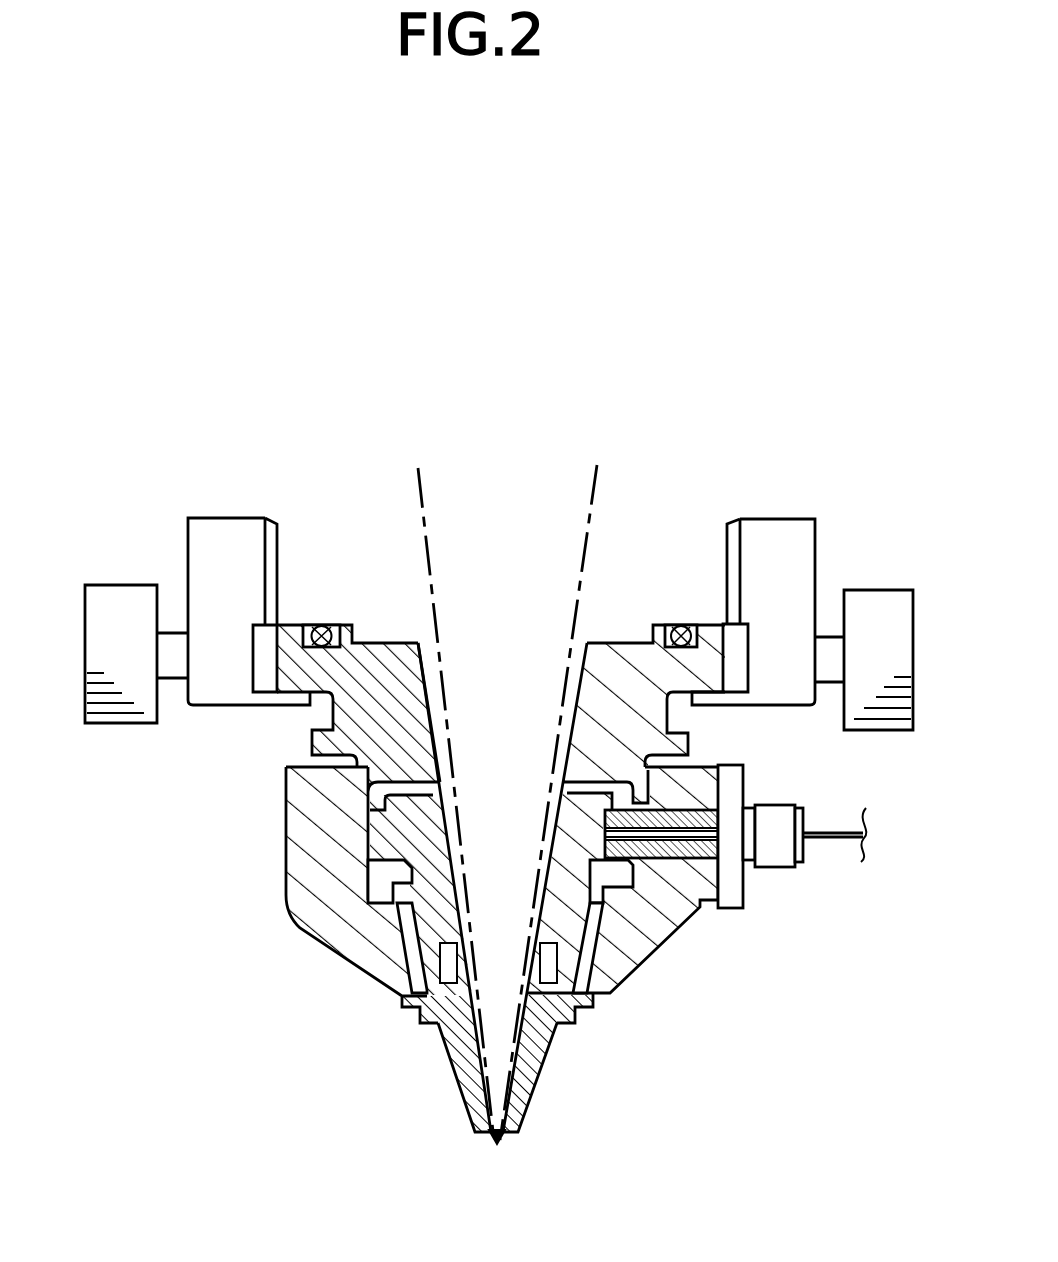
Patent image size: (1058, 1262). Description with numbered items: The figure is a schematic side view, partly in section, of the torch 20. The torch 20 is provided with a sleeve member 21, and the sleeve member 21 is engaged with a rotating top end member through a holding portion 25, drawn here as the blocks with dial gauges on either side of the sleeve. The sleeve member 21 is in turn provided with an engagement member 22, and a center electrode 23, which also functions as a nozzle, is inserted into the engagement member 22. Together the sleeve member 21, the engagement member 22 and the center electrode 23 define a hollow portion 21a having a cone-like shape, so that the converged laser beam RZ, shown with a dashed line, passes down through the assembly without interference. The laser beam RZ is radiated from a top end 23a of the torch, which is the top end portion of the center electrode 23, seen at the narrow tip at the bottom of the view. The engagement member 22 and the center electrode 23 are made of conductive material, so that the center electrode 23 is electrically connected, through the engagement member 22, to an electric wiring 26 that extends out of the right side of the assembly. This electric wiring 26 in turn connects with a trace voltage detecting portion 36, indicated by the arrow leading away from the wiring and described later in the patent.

The torch 20 is at (516, 258).
The converged laser beam RZ is at (598, 478).
The sleeve member 21 is at (347, 622).
The hollow portion 21a is at (426, 638).
The engagement member 22 is at (405, 920).
The center electrode 23 is at (440, 1048).
The top end 23a is at (486, 1140).
The holding portion 25 is at (230, 518).
The electric wiring 26 is at (832, 838).
The trace voltage detecting portion 36 is at (870, 835).